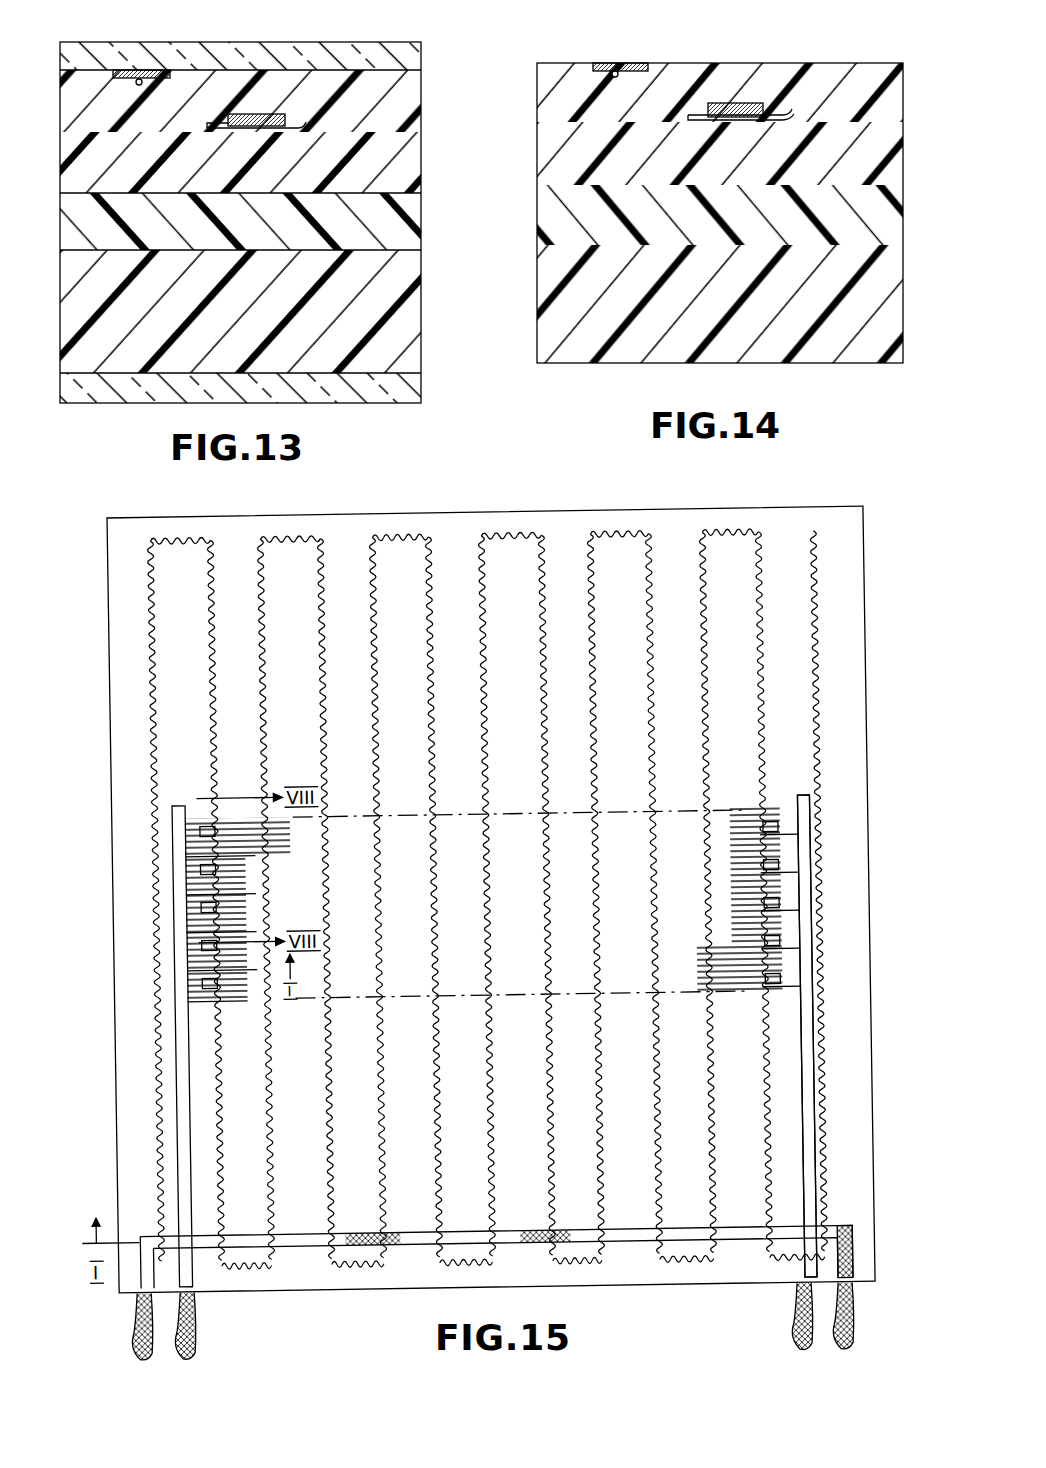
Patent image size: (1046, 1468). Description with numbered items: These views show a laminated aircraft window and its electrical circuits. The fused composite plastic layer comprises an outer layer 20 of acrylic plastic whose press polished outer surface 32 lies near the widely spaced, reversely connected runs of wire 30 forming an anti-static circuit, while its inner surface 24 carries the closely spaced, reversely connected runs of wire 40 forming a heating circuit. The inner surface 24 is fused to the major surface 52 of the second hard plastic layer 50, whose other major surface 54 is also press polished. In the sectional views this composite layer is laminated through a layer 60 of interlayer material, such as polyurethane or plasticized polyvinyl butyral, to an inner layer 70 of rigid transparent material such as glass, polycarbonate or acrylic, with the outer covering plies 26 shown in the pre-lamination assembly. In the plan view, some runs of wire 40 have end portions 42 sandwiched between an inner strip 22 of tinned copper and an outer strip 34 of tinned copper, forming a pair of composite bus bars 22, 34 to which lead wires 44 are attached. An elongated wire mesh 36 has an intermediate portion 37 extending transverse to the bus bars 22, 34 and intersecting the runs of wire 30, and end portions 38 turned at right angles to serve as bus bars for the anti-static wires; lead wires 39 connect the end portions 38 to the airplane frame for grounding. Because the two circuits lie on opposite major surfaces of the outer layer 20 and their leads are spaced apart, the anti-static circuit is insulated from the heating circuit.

In FIG. 13, the outer layer 20 is at (78, 91).
In FIG. 14, the outer layer 20 is at (898, 98).
In FIG. 13, the inner strip of tinned copper 22 is at (256, 114).
In FIG. 14, the inner strip of tinned copper 22 is at (740, 66).
In FIG. 15, the inner strip of tinned copper 22 is at (882, 1035).
In FIG. 13, the inner surface 24 is at (78, 133).
In FIG. 14, the inner surface 24 is at (562, 123).
In FIG. 13, the outer cover layer 26 is at (412, 50).
In FIG. 14, the wire 30 is at (618, 78).
In FIG. 15, the wire 30 is at (207, 680).
In FIG. 13, the outer surface 32 is at (318, 43).
In FIG. 14, the outer surface 32 is at (842, 63).
In FIG. 14, the outer strip of tinned copper 34 is at (740, 67).
In FIG. 15, the outer strip of tinned copper 34 is at (803, 1055).
In FIG. 13, the wire mesh 36 is at (138, 70).
In FIG. 14, the wire mesh 36 is at (610, 62).
In FIG. 15, the wire mesh 36 is at (851, 1224).
In FIG. 15, the intermediate portion 37 is at (532, 1258).
In FIG. 15, the end portions 38 is at (840, 1270).
In FIG. 15, the lead wires 39 is at (122, 1355).
In FIG. 14, the wire 40 is at (740, 77).
In FIG. 15, the wire 40 is at (200, 826).
In FIG. 14, the end portions 42 is at (797, 52).
In FIG. 15, the end portions 42 is at (162, 818).
In FIG. 15, the lead wires 44 is at (187, 1357).
In FIG. 13, the second hard plastic layer 50 is at (78, 164).
In FIG. 14, the second hard plastic layer 50 is at (904, 162).
In FIG. 13, the major surface 52 is at (386, 129).
In FIG. 14, the major surface 52 is at (852, 119).
In FIG. 13, the major surface 54 is at (398, 185).
In FIG. 14, the major surface 54 is at (867, 190).
In FIG. 13, the layer of interlayer material 60 is at (415, 214).
In FIG. 14, the layer of interlayer material 60 is at (886, 200).
In FIG. 13, the inner layer 70 is at (415, 300).
In FIG. 14, the inner layer 70 is at (893, 306).